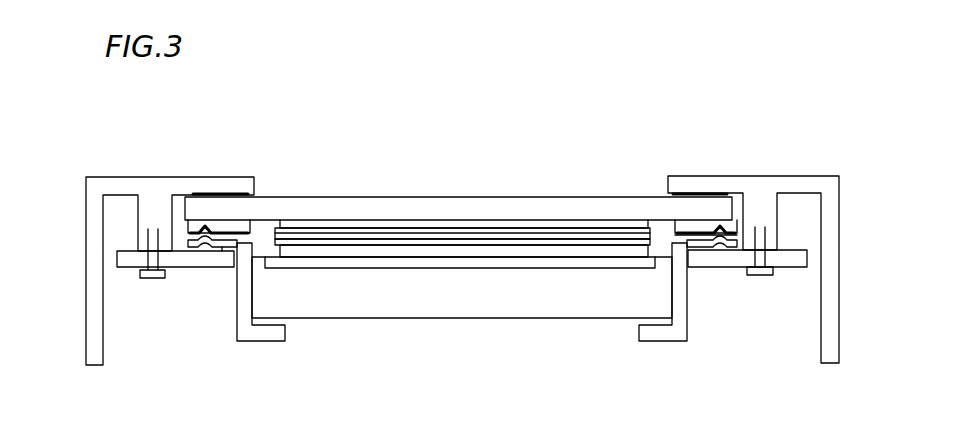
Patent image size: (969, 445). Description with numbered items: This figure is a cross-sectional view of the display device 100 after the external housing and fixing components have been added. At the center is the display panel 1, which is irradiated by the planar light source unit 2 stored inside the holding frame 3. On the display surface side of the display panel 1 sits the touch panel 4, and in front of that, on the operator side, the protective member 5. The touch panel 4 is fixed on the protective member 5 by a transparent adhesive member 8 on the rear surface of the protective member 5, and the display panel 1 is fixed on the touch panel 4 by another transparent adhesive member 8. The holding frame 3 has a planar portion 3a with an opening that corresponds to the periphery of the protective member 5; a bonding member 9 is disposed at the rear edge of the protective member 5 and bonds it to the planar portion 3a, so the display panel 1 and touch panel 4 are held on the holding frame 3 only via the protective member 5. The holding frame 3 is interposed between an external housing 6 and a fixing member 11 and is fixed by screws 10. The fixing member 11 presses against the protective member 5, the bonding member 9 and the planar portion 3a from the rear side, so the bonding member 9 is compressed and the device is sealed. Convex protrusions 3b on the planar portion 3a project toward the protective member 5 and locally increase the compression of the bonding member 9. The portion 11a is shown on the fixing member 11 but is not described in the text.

The display device 100 is at (738, 373).
The display panel 1 is at (487, 254).
The planar light source unit 2 is at (421, 297).
The holding frame 3 is at (260, 337).
The planar portion 3a is at (227, 233).
The convex protrusions 3b is at (205, 227).
The touch panel 4 is at (375, 235).
The protective member 5 is at (273, 202).
The external housing 6 is at (100, 190).
The transparent adhesive member 8 is at (310, 223).
The bonding member 9 is at (683, 227).
The screws 10 is at (147, 278).
The fixing member 11 is at (730, 262).
The engaging portion of fixing plate 11a is at (223, 247).